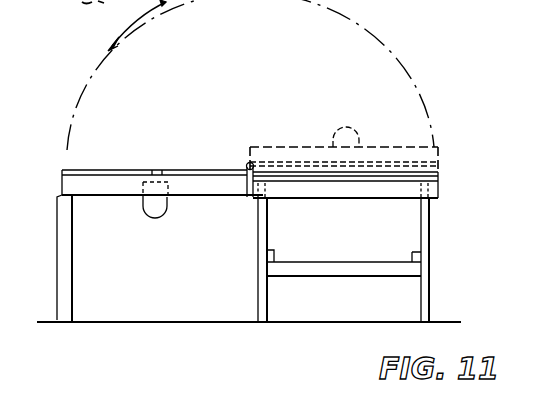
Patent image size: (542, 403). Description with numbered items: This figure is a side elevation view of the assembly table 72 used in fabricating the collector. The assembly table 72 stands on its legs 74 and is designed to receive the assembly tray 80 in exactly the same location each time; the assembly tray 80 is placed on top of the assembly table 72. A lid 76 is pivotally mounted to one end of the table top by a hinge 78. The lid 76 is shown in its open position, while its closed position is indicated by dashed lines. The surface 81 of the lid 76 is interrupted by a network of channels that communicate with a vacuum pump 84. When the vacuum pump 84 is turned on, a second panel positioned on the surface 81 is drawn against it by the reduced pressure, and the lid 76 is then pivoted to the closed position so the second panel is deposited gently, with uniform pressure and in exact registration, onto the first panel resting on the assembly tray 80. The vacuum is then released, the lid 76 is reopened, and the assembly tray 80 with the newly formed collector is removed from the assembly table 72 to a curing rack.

The assembly table 72 is at (439, 188).
The legs 74 is at (265, 232).
The lid 76 is at (438, 153).
The hinge 78 is at (247, 166).
The assembly tray 80 is at (438, 168).
The surface 81 is at (110, 173).
The vacuum pump 84 is at (153, 213).